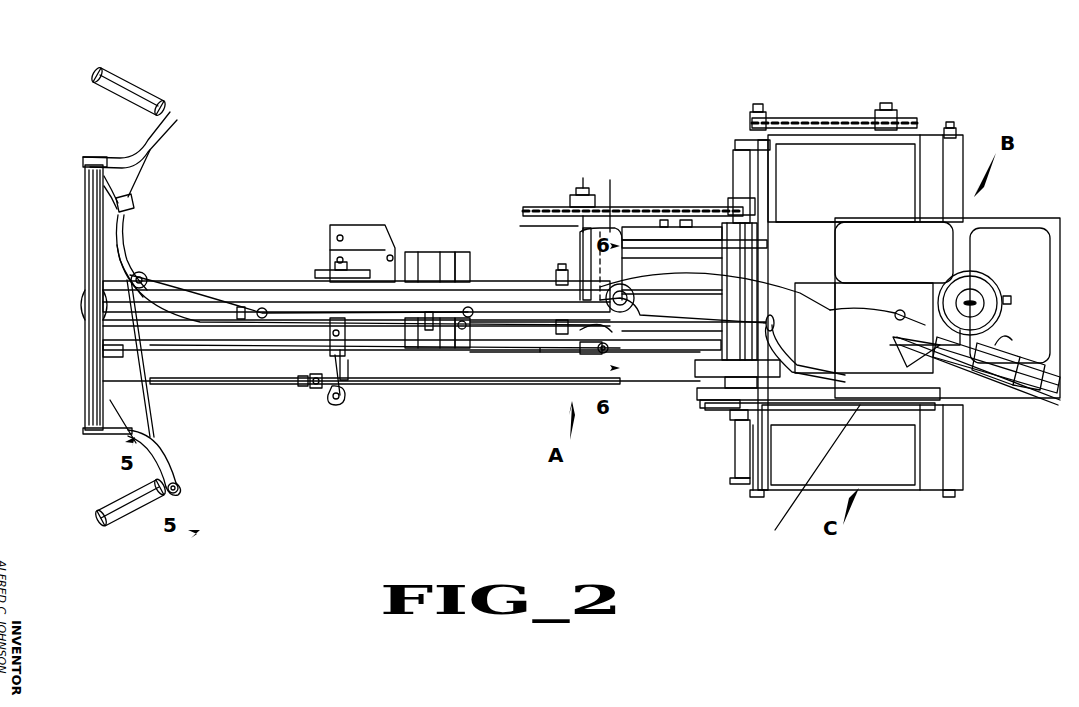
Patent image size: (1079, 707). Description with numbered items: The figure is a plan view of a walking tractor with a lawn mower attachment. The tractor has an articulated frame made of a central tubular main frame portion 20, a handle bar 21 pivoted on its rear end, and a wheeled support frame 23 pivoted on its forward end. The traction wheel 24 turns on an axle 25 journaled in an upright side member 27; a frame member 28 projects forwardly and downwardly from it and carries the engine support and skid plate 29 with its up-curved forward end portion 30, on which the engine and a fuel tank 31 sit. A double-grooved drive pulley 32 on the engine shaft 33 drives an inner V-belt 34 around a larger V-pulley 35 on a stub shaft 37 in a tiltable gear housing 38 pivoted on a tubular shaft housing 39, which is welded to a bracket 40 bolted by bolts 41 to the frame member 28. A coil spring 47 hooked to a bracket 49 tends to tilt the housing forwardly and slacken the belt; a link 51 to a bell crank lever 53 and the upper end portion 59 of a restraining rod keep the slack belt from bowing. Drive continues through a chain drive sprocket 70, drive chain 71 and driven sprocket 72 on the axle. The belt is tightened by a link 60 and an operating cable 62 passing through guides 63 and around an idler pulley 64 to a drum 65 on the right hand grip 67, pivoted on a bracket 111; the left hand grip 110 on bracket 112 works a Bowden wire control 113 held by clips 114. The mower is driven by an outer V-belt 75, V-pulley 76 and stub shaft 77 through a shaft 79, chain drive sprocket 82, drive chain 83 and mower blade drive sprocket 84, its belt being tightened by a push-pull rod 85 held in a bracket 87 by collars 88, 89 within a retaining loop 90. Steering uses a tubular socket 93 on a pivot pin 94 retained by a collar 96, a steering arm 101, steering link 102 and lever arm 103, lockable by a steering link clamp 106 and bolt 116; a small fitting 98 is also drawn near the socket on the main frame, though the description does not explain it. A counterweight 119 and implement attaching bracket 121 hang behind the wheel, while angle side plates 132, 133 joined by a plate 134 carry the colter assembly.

The main frame portion 20 is at (305, 290).
The handle bar 21 is at (86, 238).
The wheeled support frame 23 is at (620, 225).
The traction wheel 24 is at (490, 268).
The axle 25 is at (580, 195).
The upright side member 27 is at (540, 230).
The frame member 28 is at (655, 232).
The engine support and skid plate 29 is at (822, 192).
The up-curved forward end portion 30 is at (988, 220).
The fuel tank 31 is at (977, 292).
The drive pulley 32 is at (945, 420).
The engine shaft 33 is at (888, 430).
The inner V-belt 34 is at (700, 390).
The V-pulley 35 is at (710, 408).
The stub shaft 37 is at (728, 418).
The gear housing 38 is at (680, 385).
The tubular shaft housing 39 is at (748, 265).
The bracket 40 is at (670, 240).
The bolts 41 is at (705, 225).
The coil spring 47 is at (960, 395).
The bracket 49 is at (1000, 405).
The link 51 is at (805, 375).
The bell crank lever 53 is at (878, 350).
The upper end portion of restraining rod 59 is at (790, 525).
The link 60 is at (815, 322).
The operating cable 62 is at (147, 380).
The guides 63 is at (262, 306).
The idler pulley 64 is at (142, 272).
The drum 65 is at (182, 490).
The right hand grip 67 is at (105, 502).
The chain drive sprocket 70 is at (760, 230).
The drive chain 71 is at (610, 180).
The driven sprocket 72 is at (545, 207).
The outer V-belt 75 is at (800, 402).
The V-pulley 76 is at (770, 420).
The stub shaft 77 is at (735, 445).
The shaft 79 is at (756, 108).
The chain drive sprocket 82 is at (746, 112).
The drive chain 83 is at (822, 118).
The mower blade drive sprocket 84 is at (897, 112).
The push-pull rod 85 is at (540, 360).
The bracket 87 is at (340, 378).
The collar 88 is at (312, 390).
The collar 89 is at (298, 382).
The retaining loop 90 is at (338, 405).
The tubular socket 93 is at (560, 352).
The pivot pin 94 is at (625, 296).
The collar 96 is at (623, 310).
The stop 98 is at (556, 276).
The steering arm 101 is at (612, 346).
The steering link 102 is at (500, 355).
The lever arm 103 is at (82, 312).
The steering link clamp 106 is at (345, 395).
The left hand grip 110 is at (140, 83).
The bracket 111 is at (180, 467).
The bracket 112 is at (172, 128).
The Bowden wire control 113 is at (124, 240).
The clips 114 is at (240, 322).
The bolt 116 is at (350, 385).
The counterweight 119 is at (432, 252).
The implement attaching bracket 121 is at (355, 272).
The angle side plate 132 is at (330, 226).
The angle side plate 133 is at (375, 350).
The plate 134 is at (393, 267).